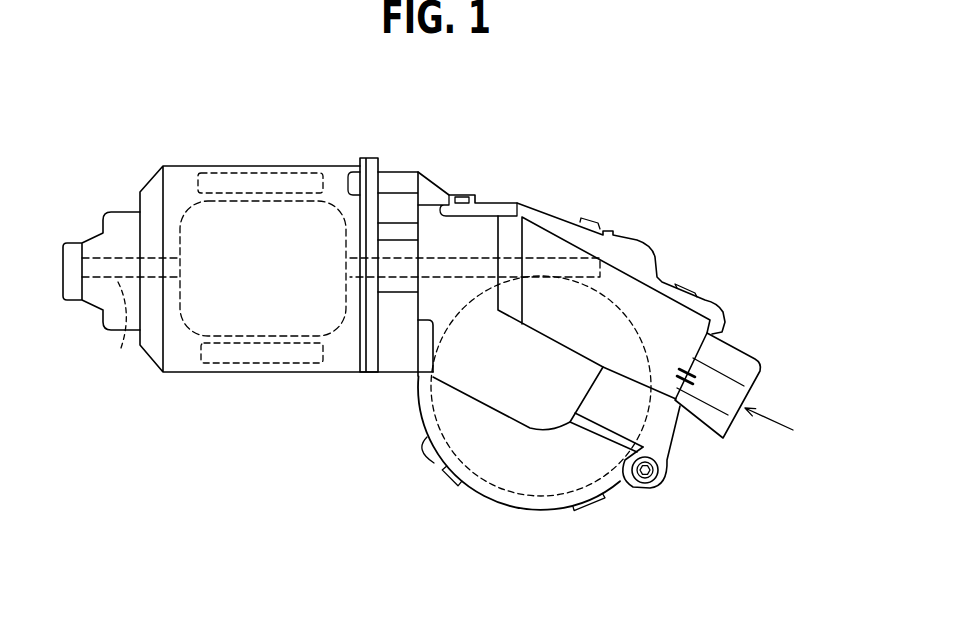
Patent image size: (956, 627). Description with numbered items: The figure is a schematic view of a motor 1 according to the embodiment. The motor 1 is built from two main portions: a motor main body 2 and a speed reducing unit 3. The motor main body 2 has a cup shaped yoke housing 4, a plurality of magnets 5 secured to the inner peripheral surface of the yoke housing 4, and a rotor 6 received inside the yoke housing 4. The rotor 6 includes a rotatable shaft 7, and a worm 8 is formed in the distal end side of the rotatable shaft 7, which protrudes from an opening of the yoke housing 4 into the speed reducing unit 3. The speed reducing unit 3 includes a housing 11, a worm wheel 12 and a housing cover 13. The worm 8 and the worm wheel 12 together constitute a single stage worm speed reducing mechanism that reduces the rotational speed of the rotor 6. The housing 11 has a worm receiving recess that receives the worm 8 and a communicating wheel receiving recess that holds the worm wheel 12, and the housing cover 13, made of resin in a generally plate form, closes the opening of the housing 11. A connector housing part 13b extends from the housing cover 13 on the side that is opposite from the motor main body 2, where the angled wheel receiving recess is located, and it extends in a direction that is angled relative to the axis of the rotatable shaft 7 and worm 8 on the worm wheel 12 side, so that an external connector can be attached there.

The motor 1 is at (372, 458).
The motor main body 2 is at (303, 409).
The speed reducing unit 3 is at (397, 430).
The yoke housing 4 is at (180, 374).
The magnets 5 is at (255, 163).
The rotor 6 is at (347, 335).
The rotatable shaft 7 is at (122, 328).
The worm 8 is at (536, 254).
The housing 11 is at (397, 376).
The worm wheel 12 is at (643, 317).
The housing cover 13 is at (518, 376).
The connector housing part 13b is at (738, 398).